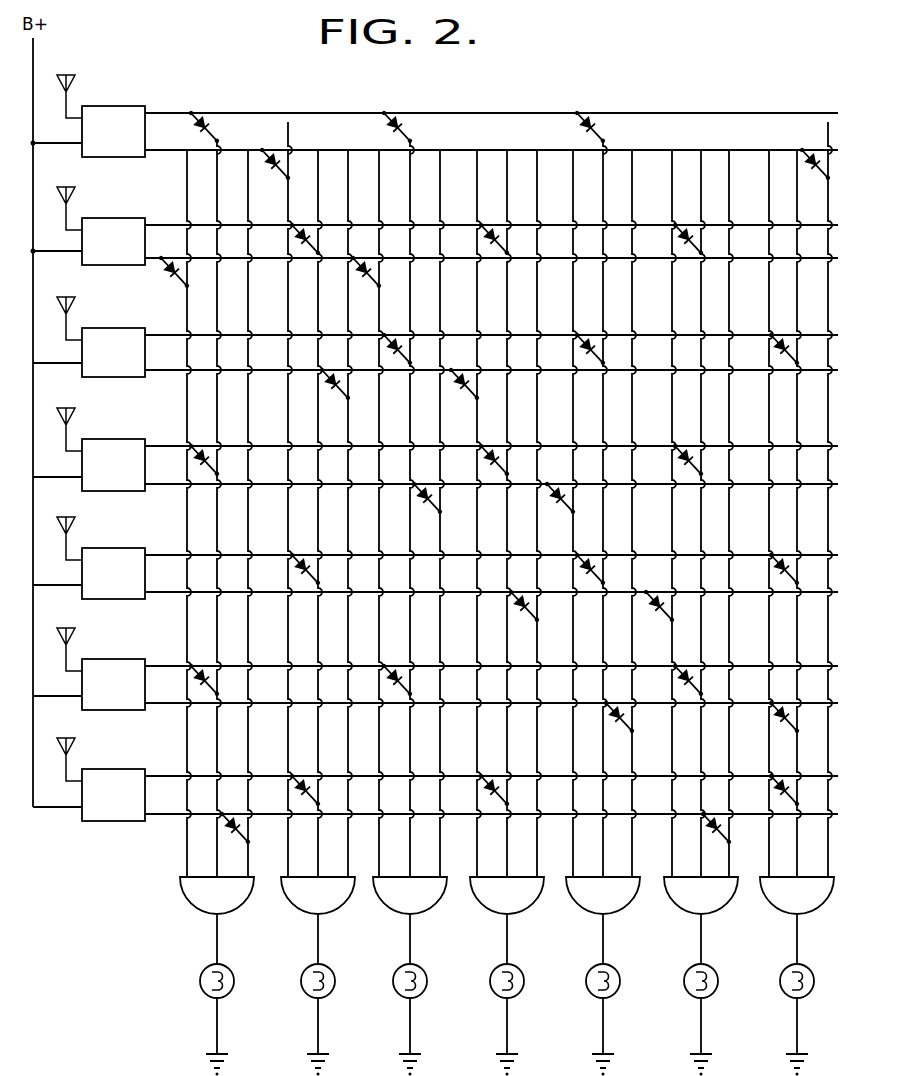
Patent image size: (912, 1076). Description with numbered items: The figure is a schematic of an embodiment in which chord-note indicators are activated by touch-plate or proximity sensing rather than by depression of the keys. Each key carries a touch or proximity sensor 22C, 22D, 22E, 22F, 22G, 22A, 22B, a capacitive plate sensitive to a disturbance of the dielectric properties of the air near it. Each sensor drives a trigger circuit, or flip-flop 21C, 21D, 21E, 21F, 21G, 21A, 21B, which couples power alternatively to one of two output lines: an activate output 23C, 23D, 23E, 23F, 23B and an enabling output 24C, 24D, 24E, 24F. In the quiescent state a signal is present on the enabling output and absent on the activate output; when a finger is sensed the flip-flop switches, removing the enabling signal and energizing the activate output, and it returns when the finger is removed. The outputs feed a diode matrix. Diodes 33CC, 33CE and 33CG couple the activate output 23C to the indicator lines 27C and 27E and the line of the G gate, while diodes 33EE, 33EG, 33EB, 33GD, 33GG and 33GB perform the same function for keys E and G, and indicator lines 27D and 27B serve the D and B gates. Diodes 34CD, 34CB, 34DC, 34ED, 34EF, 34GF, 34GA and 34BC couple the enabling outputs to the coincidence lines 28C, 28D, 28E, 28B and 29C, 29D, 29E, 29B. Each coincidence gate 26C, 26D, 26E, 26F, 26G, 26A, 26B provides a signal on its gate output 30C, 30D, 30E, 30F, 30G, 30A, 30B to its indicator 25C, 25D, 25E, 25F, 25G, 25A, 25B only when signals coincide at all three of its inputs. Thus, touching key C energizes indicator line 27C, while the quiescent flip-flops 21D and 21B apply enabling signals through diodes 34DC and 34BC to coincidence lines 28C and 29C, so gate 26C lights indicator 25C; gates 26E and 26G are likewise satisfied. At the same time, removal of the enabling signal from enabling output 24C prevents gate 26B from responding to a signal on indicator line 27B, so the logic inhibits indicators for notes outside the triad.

The flip-flop 21C is at (89, 131).
The flip-flop 21D is at (89, 241).
The flip-flop 21E is at (89, 352).
The flip-flop 21F is at (89, 465).
The flip-flop 21G is at (89, 573).
The flip-flop 21A is at (89, 684).
The flip-flop 21B is at (89, 795).
The touch or proximity sensor 22C is at (74, 80).
The touch or proximity sensor 22D is at (74, 192).
The touch or proximity sensor 22E is at (74, 302).
The touch or proximity sensor 22F is at (74, 413).
The touch or proximity sensor 22G is at (74, 522).
The touch or proximity sensor 22A is at (74, 633).
The touch or proximity sensor 22B is at (74, 743).
The activate output 23C is at (491, 105).
The activate output 23D is at (491, 217).
The activate output 23E is at (491, 327).
The activate output 23F is at (491, 438).
The activate output 23B is at (491, 768).
The enabling output 24C is at (491, 142).
The enabling output 24D is at (491, 250).
The enabling output 24E is at (491, 362).
The enabling output 24F is at (491, 476).
The indicator 25C is at (204, 992).
The indicator 25D is at (305, 992).
The indicator 25E is at (397, 992).
The indicator 25F is at (494, 992).
The indicator 25G is at (590, 992).
The indicator 25A is at (688, 992).
The indicator 25B is at (784, 992).
The coincidence gate 26C is at (247, 901).
The coincidence gate 26D is at (348, 901).
The coincidence gate 26E is at (440, 901).
The coincidence gate 26F is at (537, 901).
The coincidence gate 26G is at (633, 901).
The coincidence gate 26A is at (731, 901).
The coincidence gate 26B is at (827, 901).
The indicator line 27C is at (217, 824).
The indicator line 27D is at (318, 824).
The indicator line 27E is at (410, 824).
The indicator line 27B is at (797, 823).
The coincidence line 28C is at (187, 846).
The coincidence line 28D is at (288, 846).
The coincidence line 28E is at (379, 850).
The coincidence line 28B is at (769, 846).
The coincidence line 29C is at (248, 852).
The coincidence line 29D is at (348, 852).
The coincidence line 29E is at (440, 845).
The coincidence line 29B is at (828, 864).
The gate output 30C is at (217, 948).
The gate output 30D is at (318, 948).
The gate output 30E is at (410, 948).
The gate output 30F is at (507, 948).
The gate output 30G is at (603, 948).
The gate output 30A is at (701, 948).
The gate output 30B is at (797, 948).
The diode 33CC is at (202, 124).
The diode 33CE is at (396, 124).
The diode 33CG is at (590, 124).
The diode 33EE is at (394, 344).
The diode 33EG is at (586, 344).
The diode 33EB is at (780, 344).
The diode 33GD is at (301, 564).
The diode 33GG is at (586, 564).
The diode 33GB is at (780, 564).
The diode 34CD is at (278, 168).
The diode 34CB is at (812, 162).
The diode 34DC is at (170, 272).
The diode 34ED is at (330, 385).
The diode 34EF is at (462, 390).
The diode 34GF is at (522, 606).
The diode 34GA is at (658, 610).
The diode 34BC is at (238, 820).